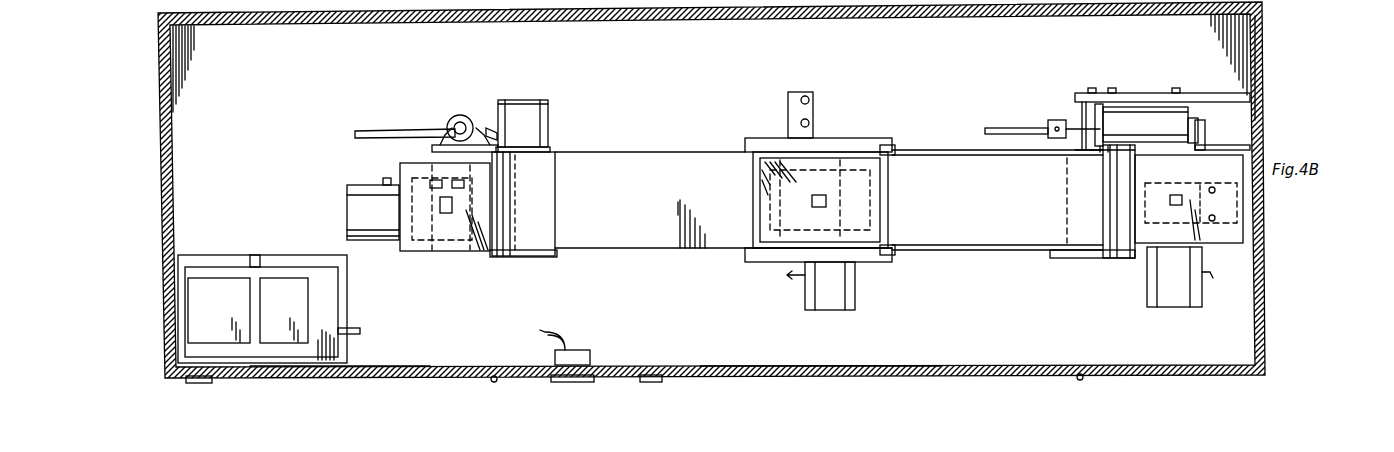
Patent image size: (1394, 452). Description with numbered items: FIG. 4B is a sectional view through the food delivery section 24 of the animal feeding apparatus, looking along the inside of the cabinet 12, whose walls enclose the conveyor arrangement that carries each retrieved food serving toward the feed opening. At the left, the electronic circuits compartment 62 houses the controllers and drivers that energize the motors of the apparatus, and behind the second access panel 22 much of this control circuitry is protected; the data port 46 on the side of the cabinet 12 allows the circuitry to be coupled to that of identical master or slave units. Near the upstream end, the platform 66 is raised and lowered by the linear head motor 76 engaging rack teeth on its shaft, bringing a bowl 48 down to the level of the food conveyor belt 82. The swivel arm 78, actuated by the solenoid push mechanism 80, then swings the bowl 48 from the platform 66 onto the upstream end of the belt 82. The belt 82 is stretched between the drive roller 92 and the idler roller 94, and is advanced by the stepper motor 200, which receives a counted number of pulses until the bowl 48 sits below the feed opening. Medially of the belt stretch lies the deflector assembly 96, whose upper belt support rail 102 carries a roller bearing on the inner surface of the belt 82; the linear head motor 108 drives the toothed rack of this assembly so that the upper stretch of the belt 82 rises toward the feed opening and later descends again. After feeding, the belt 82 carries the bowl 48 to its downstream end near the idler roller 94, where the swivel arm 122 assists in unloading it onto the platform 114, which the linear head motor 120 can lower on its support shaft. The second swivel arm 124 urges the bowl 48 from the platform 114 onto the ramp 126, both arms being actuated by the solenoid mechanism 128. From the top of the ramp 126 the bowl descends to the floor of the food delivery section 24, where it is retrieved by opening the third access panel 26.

The cabinet 12 is at (158, 55).
The second access panel 22 is at (428, 366).
The food delivery section 24 is at (1264, 62).
The third access panel 26 is at (935, 366).
The data port 46 is at (592, 350).
The bowl 48 is at (858, 160).
The electronic circuits compartment 62 is at (237, 265).
The platform 66 is at (441, 254).
The linear head motor 76 is at (350, 188).
The swivel arm 78 is at (363, 128).
The solenoid push mechanism 80 is at (462, 115).
The food conveyor belt 82 is at (632, 218).
The drive roller 92 is at (517, 258).
The idler roller 94 is at (1098, 258).
The deflector assembly 96 is at (860, 266).
The upper belt support rail 102 is at (829, 138).
The linear head motor 108 is at (805, 300).
The platform 114 is at (1235, 228).
The linear head motor 120 is at (1200, 290).
The swivel arm 122 is at (998, 128).
The swivel arm 124 is at (1235, 147).
The ramp 126 is at (1017, 258).
The solenoid mechanism 128 is at (1140, 118).
The stepper motor 200 is at (550, 110).